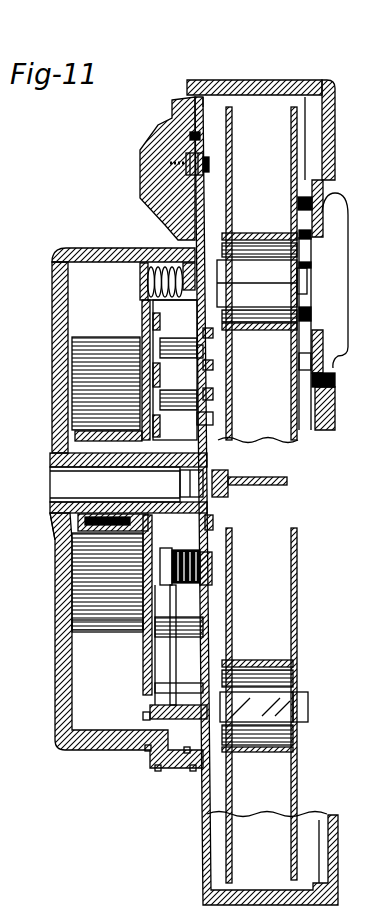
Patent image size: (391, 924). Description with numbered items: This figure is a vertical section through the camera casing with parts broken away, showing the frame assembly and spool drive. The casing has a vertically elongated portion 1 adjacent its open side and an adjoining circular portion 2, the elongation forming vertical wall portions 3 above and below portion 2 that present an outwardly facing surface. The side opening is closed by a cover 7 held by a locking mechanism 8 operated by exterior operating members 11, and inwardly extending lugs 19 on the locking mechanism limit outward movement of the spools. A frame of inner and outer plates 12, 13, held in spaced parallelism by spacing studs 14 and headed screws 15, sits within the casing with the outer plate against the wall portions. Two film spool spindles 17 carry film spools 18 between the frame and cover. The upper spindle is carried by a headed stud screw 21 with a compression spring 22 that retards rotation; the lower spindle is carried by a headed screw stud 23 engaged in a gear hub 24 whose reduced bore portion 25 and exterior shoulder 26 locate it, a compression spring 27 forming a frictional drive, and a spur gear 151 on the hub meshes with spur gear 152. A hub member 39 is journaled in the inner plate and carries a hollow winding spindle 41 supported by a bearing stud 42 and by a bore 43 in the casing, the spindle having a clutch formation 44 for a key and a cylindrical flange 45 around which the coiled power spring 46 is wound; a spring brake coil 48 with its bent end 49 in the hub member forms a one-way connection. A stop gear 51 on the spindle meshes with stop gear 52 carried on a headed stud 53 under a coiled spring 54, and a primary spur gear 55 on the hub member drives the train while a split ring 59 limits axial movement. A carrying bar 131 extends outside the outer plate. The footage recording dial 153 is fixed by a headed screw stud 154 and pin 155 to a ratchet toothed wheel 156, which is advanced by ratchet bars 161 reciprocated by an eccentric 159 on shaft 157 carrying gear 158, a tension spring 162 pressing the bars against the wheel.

The elongated portion of casing 1 is at (256, 82).
The circular portion of casing 2 is at (66, 250).
The vertical wall portions 3 is at (193, 78).
The cover 7 is at (329, 80).
The locking mechanism 8 is at (318, 222).
The operating members 11 is at (344, 362).
The inner plate 12 is at (142, 263).
The outer plate 13 is at (222, 785).
The spacing studs 14 is at (213, 420).
The headed screws 15 is at (213, 394).
The film spool spindles 17 is at (259, 268).
The film spools 18 is at (293, 80).
The lugs 19 is at (303, 197).
The headed stud screw 21 is at (97, 248).
The compression spring 22 is at (163, 260).
The headed screw stud 23 is at (147, 718).
The gear hub 24 is at (148, 750).
The reduced bore portion 25 is at (187, 752).
The shoulder 26 is at (193, 770).
The compression spring 27 is at (158, 770).
The hub member 39 is at (75, 435).
The winding spindle 41 is at (52, 510).
The bearing stud 42 is at (52, 458).
The bore 43 is at (55, 525).
The clutch formation 44 is at (153, 492).
The cylindrical flange 45 is at (80, 532).
The coiled power spring 46 is at (72, 637).
The spring brake coil 48 is at (70, 578).
The axially bent end of brake coil 49 is at (72, 413).
The stop gear 51 is at (213, 518).
The stop gear 52 is at (200, 560).
The headed stud 53 is at (172, 545).
The coiled spring 54 is at (212, 566).
The primary spur gear 55 is at (143, 557).
The split ring 59 is at (210, 465).
The carrying bar 131 is at (290, 480).
The spur gear 151 is at (180, 737).
The spur gear 152 is at (173, 648).
The footage recording dial 153 is at (178, 108).
The headed screw stud 154 is at (210, 163).
The pin 155 is at (201, 136).
The ratchet toothed wheel 156 is at (210, 97).
The shaft 157 is at (170, 337).
The gear 158 is at (197, 317).
The eccentric 159 is at (203, 352).
The ratchet bars 161 is at (213, 333).
The tension spring 162 is at (140, 283).